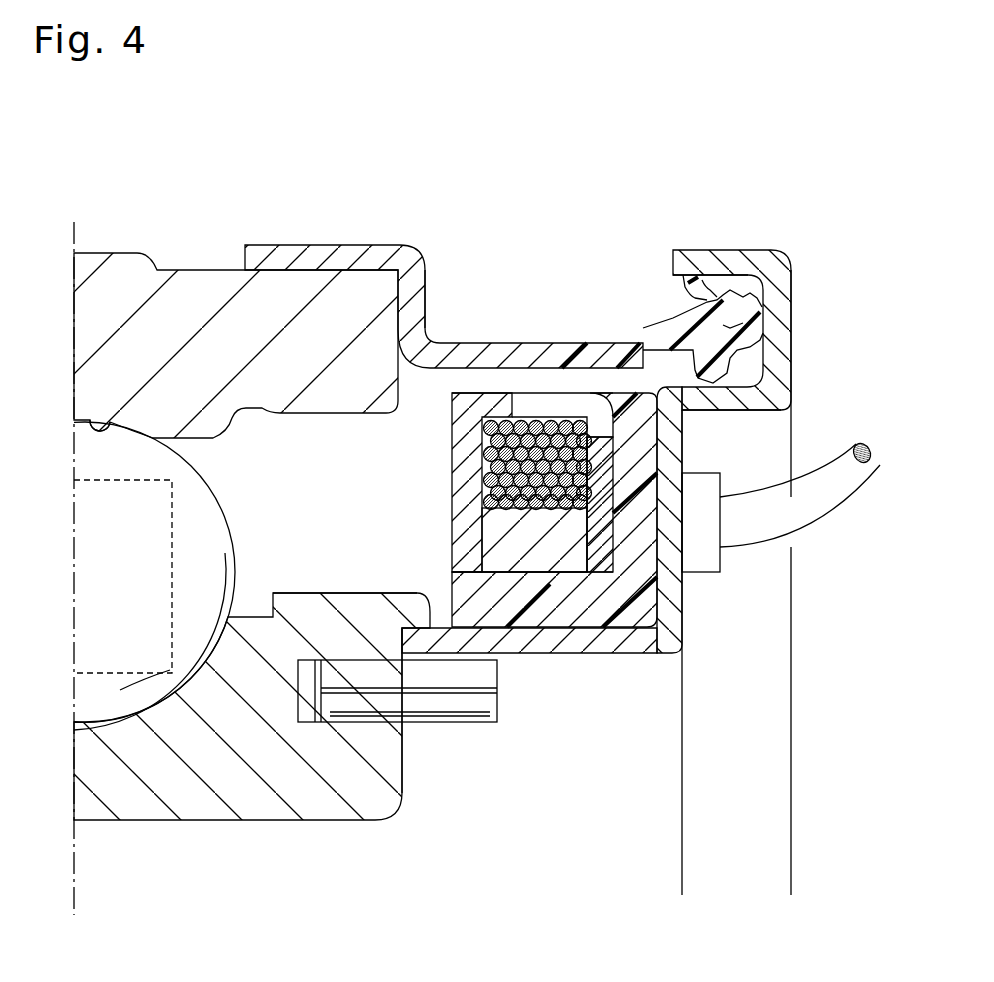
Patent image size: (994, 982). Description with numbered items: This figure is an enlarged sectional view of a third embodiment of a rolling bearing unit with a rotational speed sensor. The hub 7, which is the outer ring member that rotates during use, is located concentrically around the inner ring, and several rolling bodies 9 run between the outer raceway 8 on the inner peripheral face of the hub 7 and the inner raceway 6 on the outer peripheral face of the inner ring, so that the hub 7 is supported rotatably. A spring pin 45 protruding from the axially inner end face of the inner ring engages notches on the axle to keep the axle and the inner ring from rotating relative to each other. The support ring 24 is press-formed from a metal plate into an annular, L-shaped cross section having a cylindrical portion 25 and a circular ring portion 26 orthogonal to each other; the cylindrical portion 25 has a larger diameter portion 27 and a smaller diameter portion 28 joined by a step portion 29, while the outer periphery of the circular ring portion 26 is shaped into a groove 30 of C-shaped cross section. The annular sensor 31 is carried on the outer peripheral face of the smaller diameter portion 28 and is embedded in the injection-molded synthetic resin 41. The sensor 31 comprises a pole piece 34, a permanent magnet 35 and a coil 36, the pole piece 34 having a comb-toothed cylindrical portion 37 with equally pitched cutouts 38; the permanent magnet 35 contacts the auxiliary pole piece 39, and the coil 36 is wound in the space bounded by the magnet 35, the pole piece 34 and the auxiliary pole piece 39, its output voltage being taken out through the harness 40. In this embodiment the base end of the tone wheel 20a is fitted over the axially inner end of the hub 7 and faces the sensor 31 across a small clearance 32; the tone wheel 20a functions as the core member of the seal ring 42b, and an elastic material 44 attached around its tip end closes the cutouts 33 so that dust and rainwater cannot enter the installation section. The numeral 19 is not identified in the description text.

The inner raceway 6 is at (160, 692).
The hub 7 is at (163, 300).
The outer raceway 8 is at (92, 425).
The rolling body 9 is at (147, 605).
The hub body (outer raceway member) 19 is at (290, 640).
The tone wheel 20a is at (452, 347).
The support ring 24 is at (677, 573).
The cylindrical portion 25 is at (553, 620).
The circular ring portion 26 is at (677, 532).
The larger diameter portion 27 is at (350, 610).
The smaller diameter portion 28 is at (615, 643).
The step portion 29 is at (417, 640).
The groove 30 is at (777, 282).
The sensor 31 is at (522, 577).
The clearance 32 is at (513, 370).
The cutouts 33 is at (573, 400).
The pole piece 34 is at (600, 465).
The permanent magnet 35 is at (505, 557).
The coil 36 is at (655, 595).
The cylindrical portion 37 is at (625, 335).
The cutouts 38 is at (523, 403).
The auxiliary pole piece 39 is at (452, 478).
The harness 40 is at (843, 500).
The synthetic resin 41 is at (552, 598).
The seal ring 42b is at (473, 357).
The elastic material 44 is at (712, 287).
The spring pin 45 is at (468, 707).